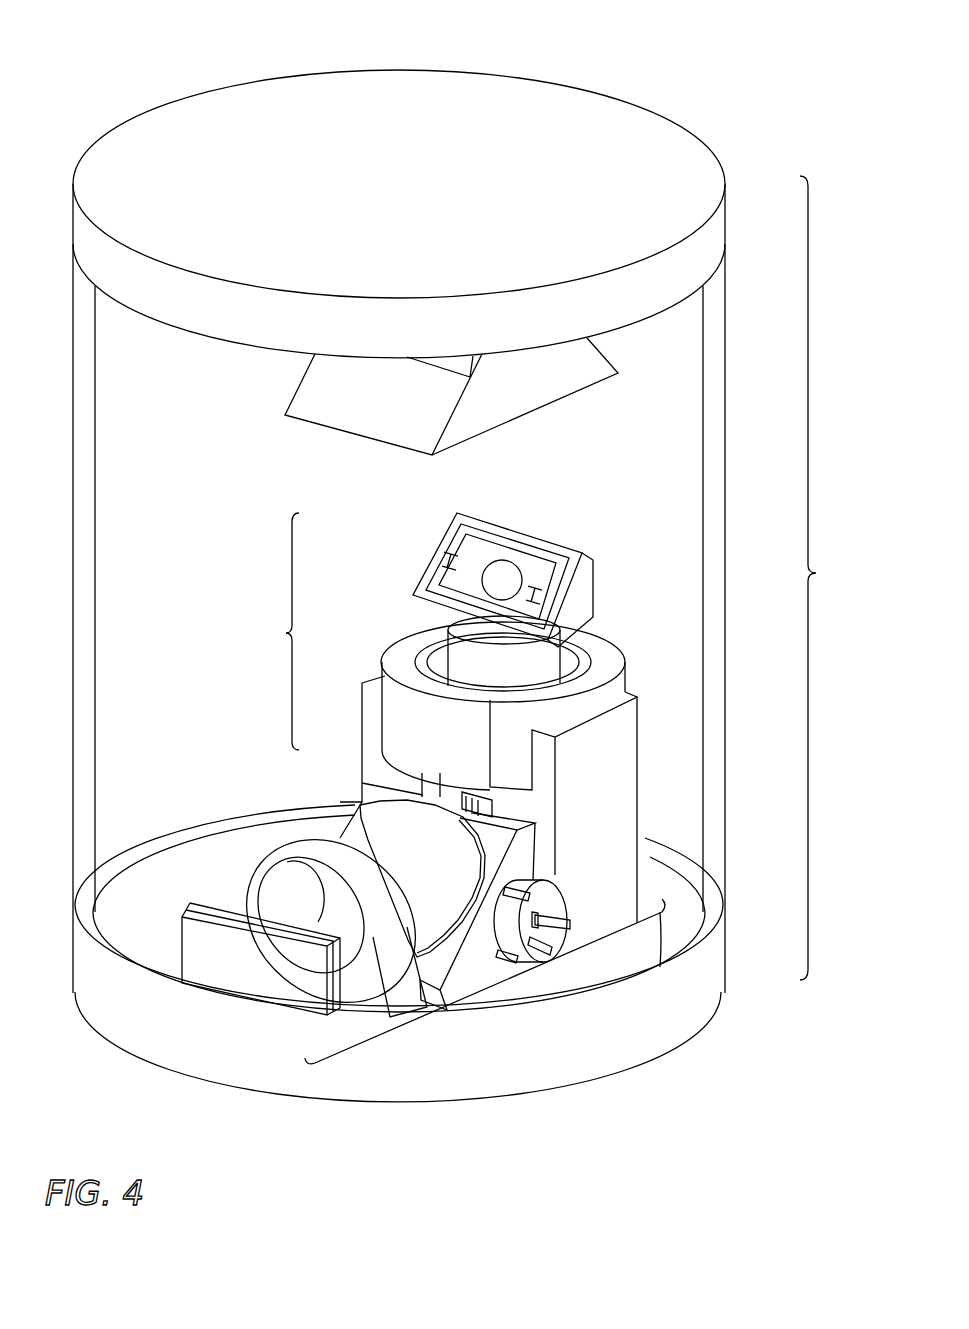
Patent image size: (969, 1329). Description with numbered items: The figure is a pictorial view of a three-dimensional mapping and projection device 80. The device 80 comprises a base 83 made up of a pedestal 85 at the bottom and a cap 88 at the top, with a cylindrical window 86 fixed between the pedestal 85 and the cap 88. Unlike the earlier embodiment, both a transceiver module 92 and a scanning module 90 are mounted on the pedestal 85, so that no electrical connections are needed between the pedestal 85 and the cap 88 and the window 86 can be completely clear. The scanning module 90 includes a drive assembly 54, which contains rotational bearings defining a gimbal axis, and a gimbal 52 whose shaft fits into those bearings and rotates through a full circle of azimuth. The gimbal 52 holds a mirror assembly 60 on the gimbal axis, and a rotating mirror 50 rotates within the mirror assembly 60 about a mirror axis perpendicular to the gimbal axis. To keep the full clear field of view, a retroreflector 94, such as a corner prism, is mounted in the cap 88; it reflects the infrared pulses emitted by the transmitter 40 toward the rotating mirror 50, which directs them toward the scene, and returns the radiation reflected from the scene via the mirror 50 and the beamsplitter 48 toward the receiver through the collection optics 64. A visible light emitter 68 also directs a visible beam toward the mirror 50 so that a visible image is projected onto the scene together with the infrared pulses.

The 3D mapping and projection device 80 is at (123, 72).
The cap 88 is at (617, 102).
The cylindrical window 86 is at (723, 866).
The pedestal 85 is at (360, 1085).
The base 83 is at (827, 578).
The scanning module 90 is at (275, 631).
The retroreflector 94 is at (618, 373).
The mirror assembly 60 is at (593, 560).
The rotating mirror 50 is at (505, 540).
The gimbal 52 is at (593, 600).
The drive assembly 54 is at (627, 682).
The beamsplitter 48 is at (370, 830).
The collection optics 64 is at (267, 868).
The transmitter 40 is at (216, 988).
The visible light emitter 68 is at (540, 880).
The transceiver module 92 is at (495, 993).